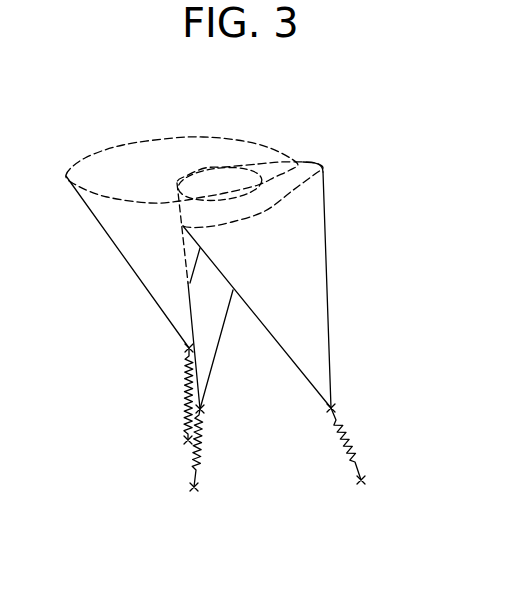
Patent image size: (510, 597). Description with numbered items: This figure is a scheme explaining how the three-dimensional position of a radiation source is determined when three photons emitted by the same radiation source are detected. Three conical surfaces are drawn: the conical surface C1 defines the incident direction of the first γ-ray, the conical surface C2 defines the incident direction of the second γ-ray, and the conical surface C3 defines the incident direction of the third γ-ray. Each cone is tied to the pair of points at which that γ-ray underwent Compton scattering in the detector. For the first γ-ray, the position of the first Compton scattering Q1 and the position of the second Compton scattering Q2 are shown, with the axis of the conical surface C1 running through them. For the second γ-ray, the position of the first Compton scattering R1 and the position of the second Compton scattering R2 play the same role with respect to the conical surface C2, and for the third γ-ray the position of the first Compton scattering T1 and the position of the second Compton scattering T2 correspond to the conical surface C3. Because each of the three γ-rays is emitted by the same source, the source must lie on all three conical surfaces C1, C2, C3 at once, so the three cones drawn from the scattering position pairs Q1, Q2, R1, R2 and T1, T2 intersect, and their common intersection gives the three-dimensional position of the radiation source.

The conical surface C1 is at (122, 143).
The conical surface C2 is at (324, 283).
The conical surface C3 is at (205, 196).
The position of the first Compton scattering of the first γ-ray Q1 is at (185, 348).
The position of the second Compton scattering of the first γ-ray Q2 is at (185, 440).
The position of the first Compton scattering of the second γ-ray R1 is at (207, 409).
The position of the second Compton scattering of the second γ-ray R2 is at (200, 487).
The position of the first Compton scattering of the third γ-ray T1 is at (338, 406).
The position of the second Compton scattering of the third γ-ray T2 is at (367, 479).